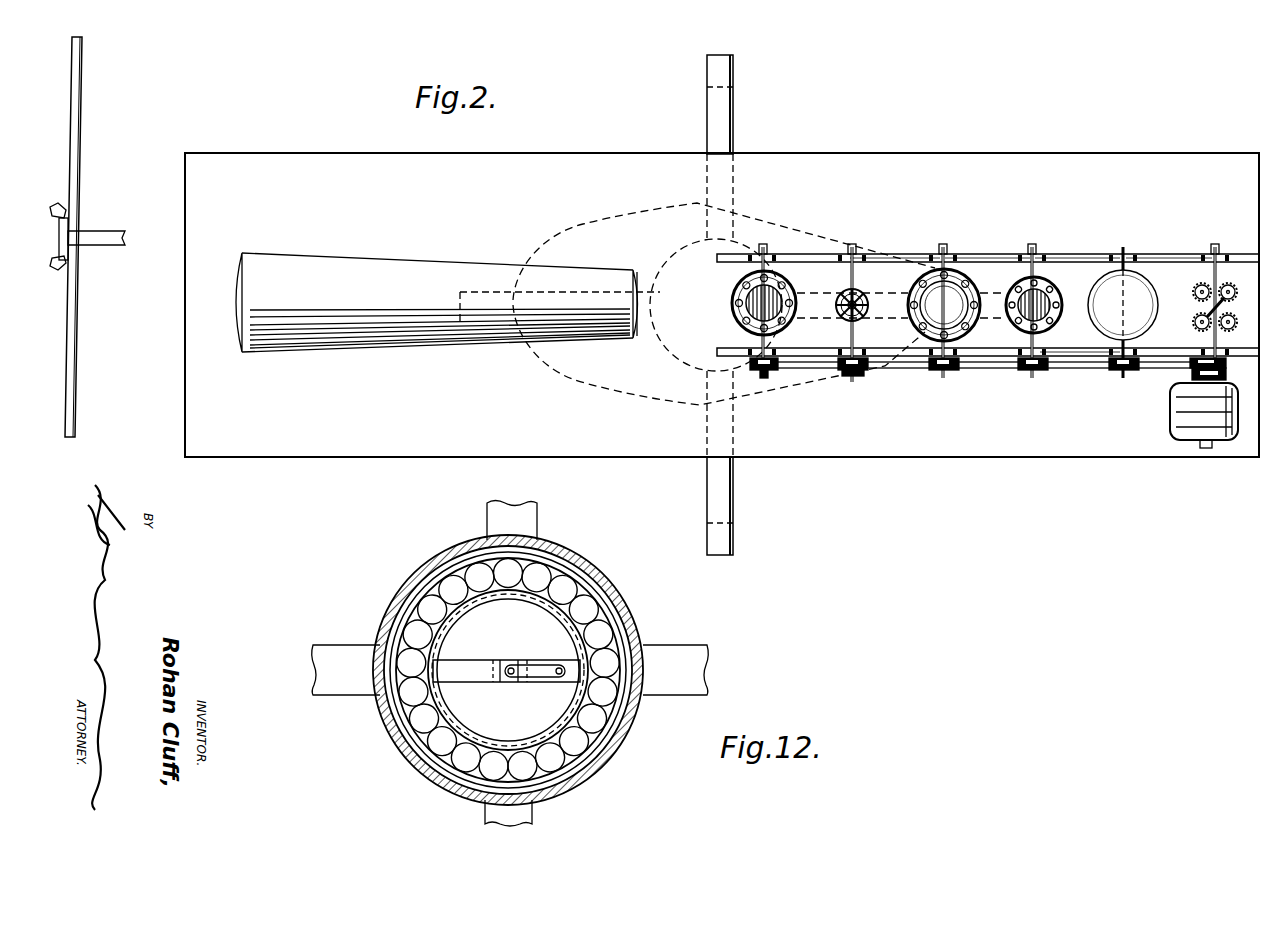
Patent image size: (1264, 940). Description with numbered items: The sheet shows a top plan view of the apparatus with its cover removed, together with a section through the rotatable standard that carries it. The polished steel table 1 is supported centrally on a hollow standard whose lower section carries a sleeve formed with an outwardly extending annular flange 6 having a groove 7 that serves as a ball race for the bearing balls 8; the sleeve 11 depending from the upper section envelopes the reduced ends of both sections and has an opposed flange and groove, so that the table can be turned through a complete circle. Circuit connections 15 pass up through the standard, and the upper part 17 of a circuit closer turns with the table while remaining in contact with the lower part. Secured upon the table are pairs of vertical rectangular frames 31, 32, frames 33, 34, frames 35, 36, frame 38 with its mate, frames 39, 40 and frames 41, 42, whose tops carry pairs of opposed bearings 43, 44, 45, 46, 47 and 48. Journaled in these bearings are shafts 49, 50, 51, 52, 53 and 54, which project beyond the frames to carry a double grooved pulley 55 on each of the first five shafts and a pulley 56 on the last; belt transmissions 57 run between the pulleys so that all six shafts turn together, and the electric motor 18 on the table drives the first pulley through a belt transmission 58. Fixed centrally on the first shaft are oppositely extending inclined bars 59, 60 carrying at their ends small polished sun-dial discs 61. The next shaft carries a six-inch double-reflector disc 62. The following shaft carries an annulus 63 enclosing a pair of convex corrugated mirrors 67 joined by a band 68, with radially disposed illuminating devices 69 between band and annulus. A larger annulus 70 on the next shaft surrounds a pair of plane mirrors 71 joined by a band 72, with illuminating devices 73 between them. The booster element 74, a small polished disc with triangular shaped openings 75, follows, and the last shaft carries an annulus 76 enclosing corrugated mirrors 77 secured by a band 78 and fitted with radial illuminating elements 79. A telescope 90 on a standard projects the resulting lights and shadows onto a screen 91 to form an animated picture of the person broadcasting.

In FIG. 2, the table 1 is at (269, 152).
In FIG. 12, the annular flange 6 is at (557, 567).
In FIG. 12, the groove 7 is at (403, 598).
In FIG. 12, the bearing balls 8 is at (582, 601).
In FIG. 12, the sleeve 11 is at (440, 560).
In FIG. 12, the circuit connections 15 is at (508, 670).
In FIG. 12, the upper part 17 is at (510, 684).
In FIG. 2, the electric motor 18 is at (1176, 422).
In FIG. 2, the frame 31 is at (1186, 254).
In FIG. 2, the frame 32 is at (1190, 348).
In FIG. 2, the frame 33 is at (1093, 254).
In FIG. 2, the frame 34 is at (1093, 348).
In FIG. 2, the frame 35 is at (1003, 254).
In FIG. 2, the frame 36 is at (1010, 356).
In FIG. 2, the frame 38 is at (926, 356).
In FIG. 2, the frame 39 is at (883, 254).
In FIG. 2, the frame 40 is at (828, 352).
In FIG. 2, the frame 41 is at (792, 254).
In FIG. 2, the frame 42 is at (768, 352).
In FIG. 2, the bearings 43 is at (1220, 254).
In FIG. 2, the bearings 44 is at (1128, 254).
In FIG. 2, the bearings 45 is at (1037, 254).
In FIG. 2, the bearings 46 is at (948, 254).
In FIG. 2, the bearings 47 is at (856, 254).
In FIG. 2, the bearings 48 is at (763, 254).
In FIG. 2, the shaft 49 is at (1220, 270).
In FIG. 2, the shaft 50 is at (1128, 268).
In FIG. 2, the shaft 51 is at (1038, 268).
In FIG. 2, the shaft 52 is at (950, 265).
In FIG. 2, the shaft 53 is at (858, 265).
In FIG. 2, the shaft 54 is at (770, 265).
In FIG. 2, the double grooved pulley 55 is at (1108, 375).
In FIG. 2, the pulley 56 is at (772, 370).
In FIG. 2, the belt transmissions 57 is at (1158, 368).
In FIG. 2, the belt transmission 58 is at (1190, 376).
In FIG. 2, the inclined bar 59 is at (1236, 297).
In FIG. 2, the inclined bar 60 is at (1236, 319).
In FIG. 2, the circular disc 61 is at (1196, 318).
In FIG. 2, the circular disc 62 is at (1145, 296).
In FIG. 2, the annulus 63 is at (1058, 322).
In FIG. 2, the convex corrugated mirrors 67 is at (1058, 298).
In FIG. 2, the band 68 is at (1050, 307).
In FIG. 2, the illuminating devices 69 is at (974, 316).
In FIG. 2, the annulus 70 is at (908, 306).
In FIG. 2, the plane mirrors 71 is at (950, 297).
In FIG. 2, the band 72 is at (976, 305).
In FIG. 2, the illuminating devices 73 is at (917, 320).
In FIG. 2, the booster element 74 is at (836, 306).
In FIG. 2, the triangular shaped openings 75 is at (862, 298).
In FIG. 2, the annulus 76 is at (760, 307).
In FIG. 2, the corrugated mirrors 77 is at (735, 300).
In FIG. 2, the band 78 is at (790, 288).
In FIG. 2, the illuminating elements 79 is at (740, 318).
In FIG. 2, the telescope 90 is at (335, 262).
In FIG. 2, the screen 91 is at (84, 135).